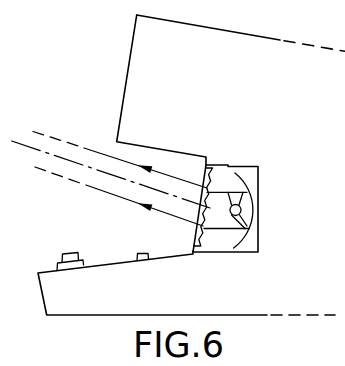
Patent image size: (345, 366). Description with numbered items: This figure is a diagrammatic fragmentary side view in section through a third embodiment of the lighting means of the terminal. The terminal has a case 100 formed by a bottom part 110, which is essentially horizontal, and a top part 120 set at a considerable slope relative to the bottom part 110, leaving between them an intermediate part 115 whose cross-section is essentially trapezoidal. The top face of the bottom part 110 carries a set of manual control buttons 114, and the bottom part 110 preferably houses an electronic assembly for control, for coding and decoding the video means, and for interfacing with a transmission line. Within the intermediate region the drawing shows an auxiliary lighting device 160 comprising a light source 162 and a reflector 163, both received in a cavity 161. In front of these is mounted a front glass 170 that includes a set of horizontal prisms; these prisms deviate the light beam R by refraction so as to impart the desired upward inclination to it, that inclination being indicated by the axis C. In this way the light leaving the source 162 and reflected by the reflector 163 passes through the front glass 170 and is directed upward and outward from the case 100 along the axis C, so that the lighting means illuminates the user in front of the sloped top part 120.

The case 100 is at (66, 85).
The bottom part 110 is at (162, 302).
The manual control buttons 114 is at (71, 253).
The intermediate part 115 is at (322, 240).
The top part 120 is at (248, 87).
The nozzle assembly 160 is at (238, 264).
The cavity 161 is at (246, 175).
The light source 162 is at (228, 192).
The reflector 163 is at (241, 206).
The front glass 170 is at (205, 180).
The radiation beam R is at (97, 189).
The axis C is at (23, 145).